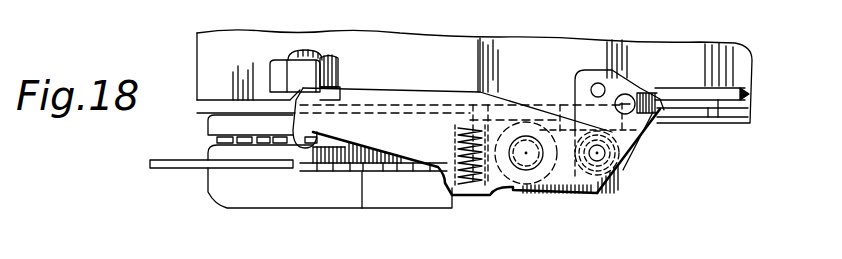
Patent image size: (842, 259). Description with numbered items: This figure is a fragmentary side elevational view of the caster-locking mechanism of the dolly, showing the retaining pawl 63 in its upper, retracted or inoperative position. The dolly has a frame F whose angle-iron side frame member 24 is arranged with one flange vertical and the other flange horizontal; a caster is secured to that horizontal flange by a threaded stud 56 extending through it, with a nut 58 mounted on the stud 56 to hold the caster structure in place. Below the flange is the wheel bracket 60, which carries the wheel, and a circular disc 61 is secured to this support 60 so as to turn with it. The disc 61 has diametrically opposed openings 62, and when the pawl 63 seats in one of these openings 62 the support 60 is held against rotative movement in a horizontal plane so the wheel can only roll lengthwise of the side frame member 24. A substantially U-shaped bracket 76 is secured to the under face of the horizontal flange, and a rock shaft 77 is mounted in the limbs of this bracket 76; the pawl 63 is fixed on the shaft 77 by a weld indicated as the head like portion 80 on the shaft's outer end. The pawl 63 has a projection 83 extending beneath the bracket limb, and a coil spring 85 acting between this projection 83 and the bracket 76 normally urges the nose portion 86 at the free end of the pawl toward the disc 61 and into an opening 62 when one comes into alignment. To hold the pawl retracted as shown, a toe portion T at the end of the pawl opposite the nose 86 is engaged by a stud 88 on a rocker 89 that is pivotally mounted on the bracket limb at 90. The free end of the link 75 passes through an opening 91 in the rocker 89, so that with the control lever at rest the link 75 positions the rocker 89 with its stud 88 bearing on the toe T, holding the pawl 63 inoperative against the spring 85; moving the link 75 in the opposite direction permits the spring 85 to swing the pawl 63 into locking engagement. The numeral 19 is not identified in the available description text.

The frame F is at (202, 29).
The toe portion T is at (640, 138).
The frame portion 19 is at (391, 6).
The side frame member 24 is at (478, 45).
The threaded stud 56 is at (308, 55).
The nut 58 is at (338, 70).
The wheel bracket 60 is at (222, 200).
The circular disc 61 is at (183, 168).
The opening 62 is at (280, 173).
The pawl 63 is at (450, 82).
The link 75 is at (710, 88).
The U-shaped bracket 76 is at (548, 125).
The rock shaft 77 is at (525, 125).
The head like portion 80 is at (526, 160).
The projection 83 is at (470, 188).
The coil spring 85 is at (436, 172).
The nose portion 86 is at (293, 128).
The stud 88 is at (633, 97).
The rocker 89 is at (585, 72).
The pivot 90 is at (597, 160).
The opening 91 is at (604, 86).